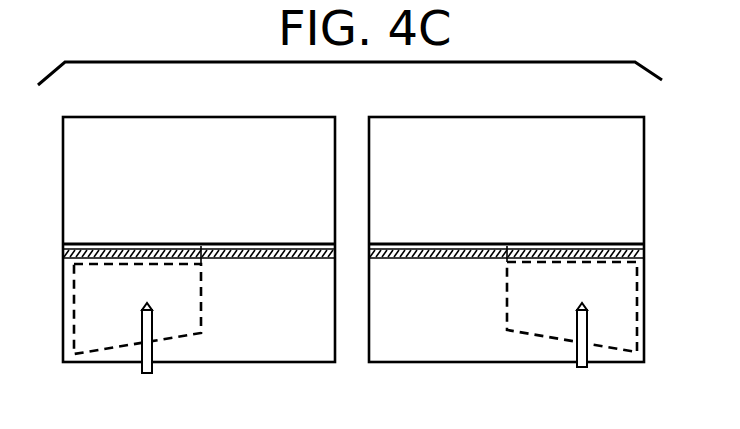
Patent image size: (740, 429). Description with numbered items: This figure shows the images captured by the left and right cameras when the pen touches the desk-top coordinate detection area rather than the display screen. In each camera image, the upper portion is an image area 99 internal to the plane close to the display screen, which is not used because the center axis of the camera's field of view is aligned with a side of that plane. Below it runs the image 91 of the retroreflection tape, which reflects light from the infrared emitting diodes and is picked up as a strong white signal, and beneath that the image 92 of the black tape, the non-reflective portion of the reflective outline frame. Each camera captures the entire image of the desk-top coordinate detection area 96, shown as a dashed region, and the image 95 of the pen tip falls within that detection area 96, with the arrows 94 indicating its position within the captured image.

The image area 99 is at (188, 133).
The image of the retroreflection tape 91 is at (253, 243).
The image of the black tape 92 is at (267, 260).
The desk-top coordinate detection area 96 is at (181, 317).
The image of the pen tip 95 is at (141, 306).
The movement arrow 94 is at (168, 357).